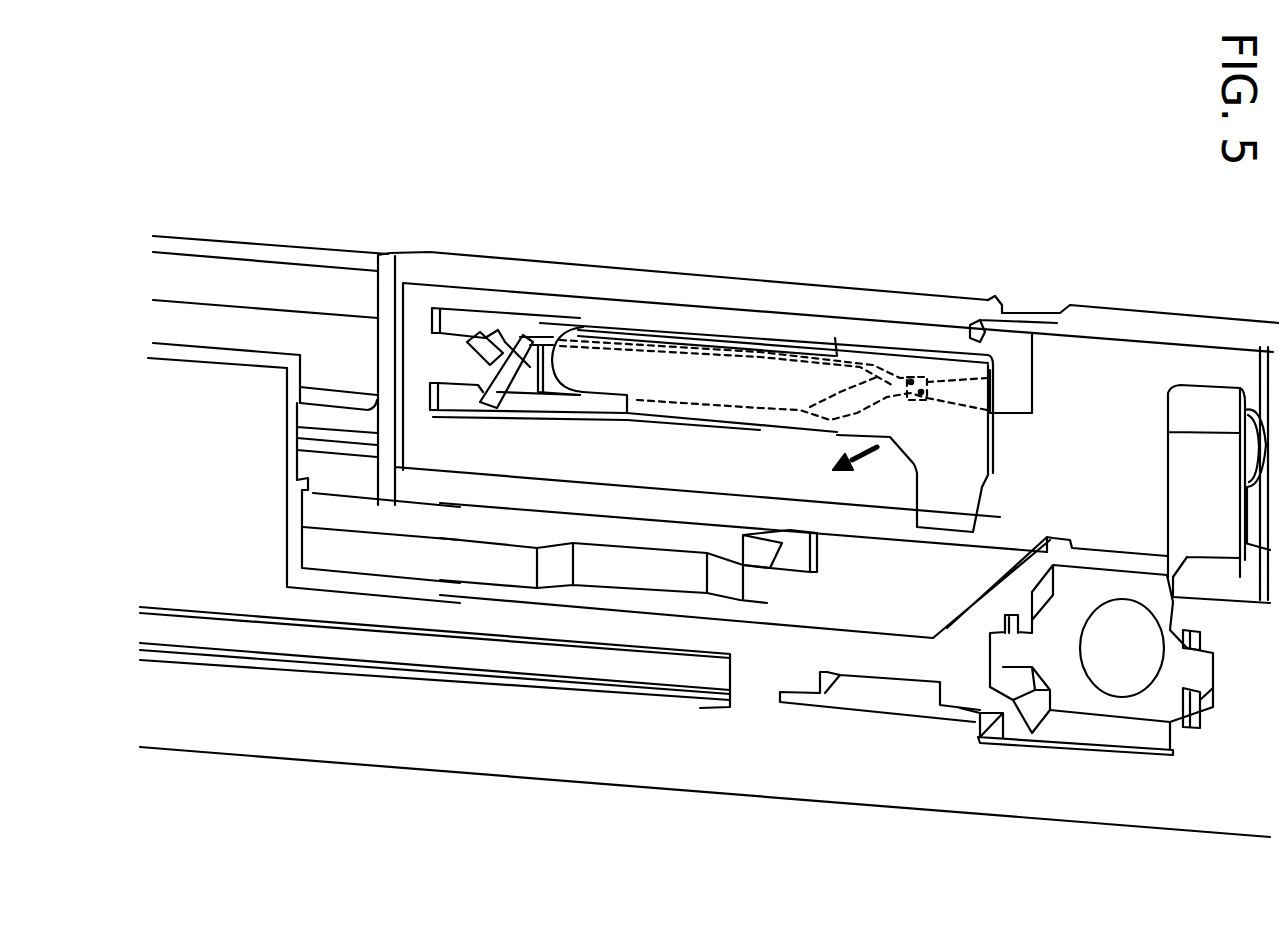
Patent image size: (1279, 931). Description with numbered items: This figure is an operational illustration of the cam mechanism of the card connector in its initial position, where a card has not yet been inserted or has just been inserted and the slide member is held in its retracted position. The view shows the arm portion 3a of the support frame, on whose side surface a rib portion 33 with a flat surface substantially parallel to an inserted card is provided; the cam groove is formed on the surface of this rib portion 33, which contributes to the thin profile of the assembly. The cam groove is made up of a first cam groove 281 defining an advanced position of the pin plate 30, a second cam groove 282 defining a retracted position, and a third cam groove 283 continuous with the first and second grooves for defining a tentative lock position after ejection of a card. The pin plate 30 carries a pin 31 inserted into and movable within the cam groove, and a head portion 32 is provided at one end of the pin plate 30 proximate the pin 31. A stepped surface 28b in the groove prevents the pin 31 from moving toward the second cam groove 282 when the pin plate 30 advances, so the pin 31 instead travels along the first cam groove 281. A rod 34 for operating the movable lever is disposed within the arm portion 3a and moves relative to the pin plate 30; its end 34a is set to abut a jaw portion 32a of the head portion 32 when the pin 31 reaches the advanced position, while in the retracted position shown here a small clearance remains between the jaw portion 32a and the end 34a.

The arm portion 3a is at (968, 788).
The stepped surface 28b is at (867, 350).
The pin plate 30 is at (897, 353).
The pin 31 is at (922, 376).
The head portion 32 is at (963, 463).
The jaw portion 32a is at (913, 493).
The rib portion 33 is at (703, 293).
The rod 34 is at (380, 563).
The end of rod 34a is at (795, 562).
The first cam groove 281 is at (573, 412).
The second cam groove 282 is at (543, 323).
The third cam groove 283 is at (512, 368).